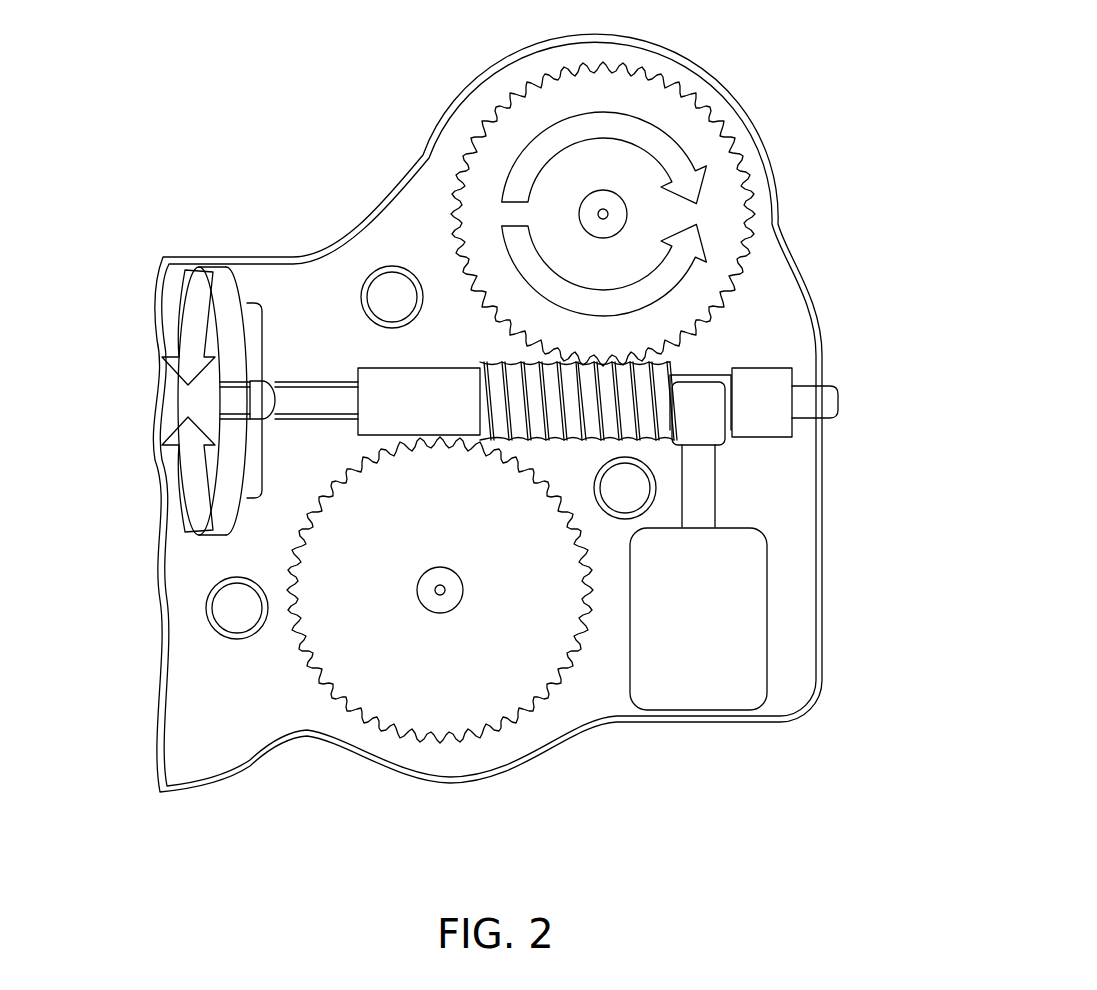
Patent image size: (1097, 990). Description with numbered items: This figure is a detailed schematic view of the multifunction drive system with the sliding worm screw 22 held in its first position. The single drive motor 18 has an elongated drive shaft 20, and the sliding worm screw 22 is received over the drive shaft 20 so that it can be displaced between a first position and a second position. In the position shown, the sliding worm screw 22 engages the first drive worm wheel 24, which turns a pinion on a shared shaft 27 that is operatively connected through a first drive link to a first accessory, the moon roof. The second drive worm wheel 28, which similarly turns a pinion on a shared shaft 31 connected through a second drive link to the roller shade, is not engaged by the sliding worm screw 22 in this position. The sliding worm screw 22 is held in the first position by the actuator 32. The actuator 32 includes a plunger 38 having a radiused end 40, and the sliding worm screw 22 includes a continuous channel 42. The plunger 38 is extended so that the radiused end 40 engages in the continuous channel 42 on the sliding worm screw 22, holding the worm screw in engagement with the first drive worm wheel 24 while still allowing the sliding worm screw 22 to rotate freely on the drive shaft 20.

The single drive motor 18 is at (183, 403).
The drive shaft 20 is at (303, 400).
The sliding worm screw 22 is at (452, 385).
The first drive worm wheel 24 is at (643, 105).
The shared shaft 27 is at (621, 216).
The second drive worm wheel 28 is at (390, 700).
The shared shaft 31 is at (448, 605).
The actuator 32 is at (718, 690).
The plunger 38 is at (705, 497).
The radiused end 40 is at (705, 398).
The continuous channel 42 is at (693, 378).